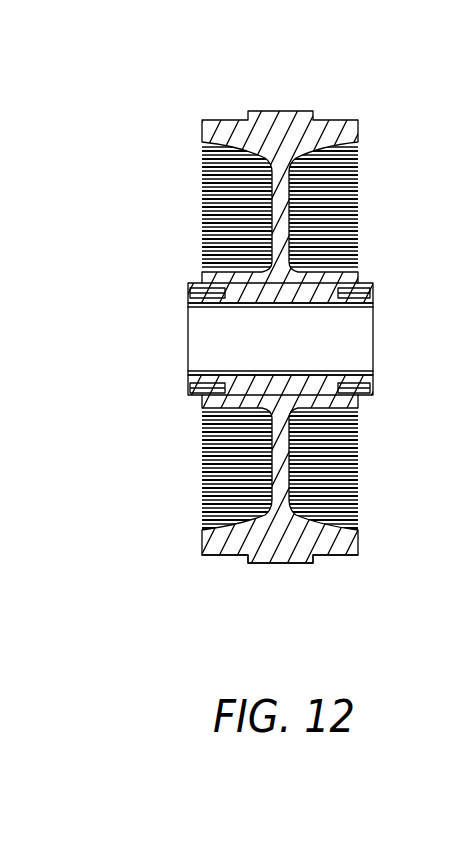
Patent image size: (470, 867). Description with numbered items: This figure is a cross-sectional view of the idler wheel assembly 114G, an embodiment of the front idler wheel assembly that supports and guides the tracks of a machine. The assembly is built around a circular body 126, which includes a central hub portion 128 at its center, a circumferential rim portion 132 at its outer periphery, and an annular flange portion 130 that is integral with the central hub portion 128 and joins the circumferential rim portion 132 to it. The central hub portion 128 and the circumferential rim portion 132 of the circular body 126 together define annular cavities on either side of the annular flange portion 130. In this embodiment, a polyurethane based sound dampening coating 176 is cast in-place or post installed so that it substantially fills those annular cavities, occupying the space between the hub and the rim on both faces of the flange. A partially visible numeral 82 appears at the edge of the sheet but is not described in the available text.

The idler wheel assembly 114G is at (235, 298).
The circumferential rim portion 132 is at (213, 131).
The sound dampening coating 176 is at (348, 228).
The central hub portion 128 is at (206, 393).
The annular flange portion 130 is at (266, 443).
The circular body 126 is at (204, 547).
The shaft 82 is at (7, 250).